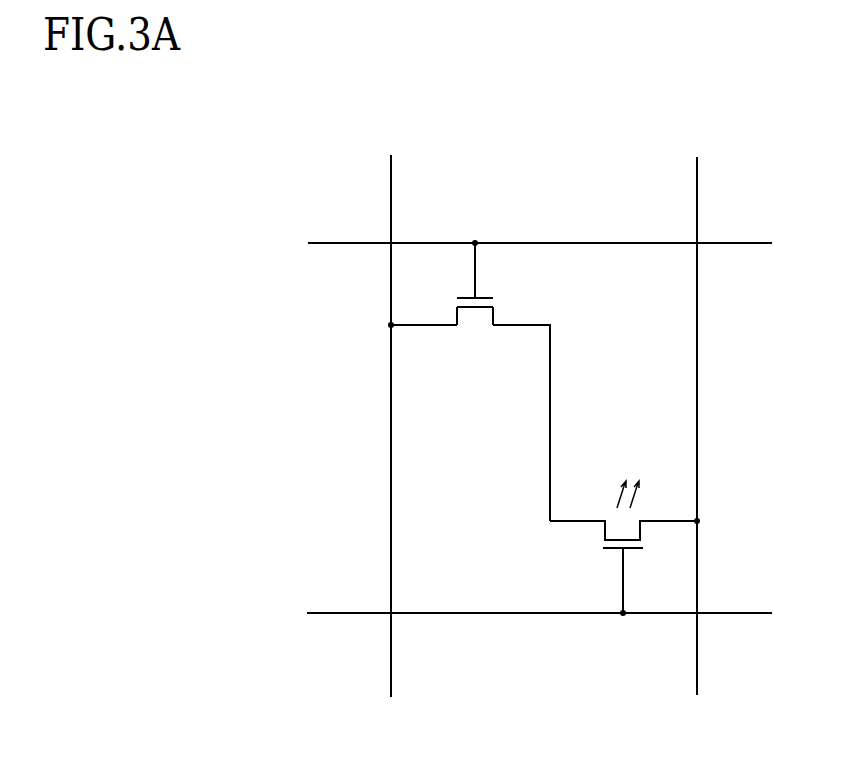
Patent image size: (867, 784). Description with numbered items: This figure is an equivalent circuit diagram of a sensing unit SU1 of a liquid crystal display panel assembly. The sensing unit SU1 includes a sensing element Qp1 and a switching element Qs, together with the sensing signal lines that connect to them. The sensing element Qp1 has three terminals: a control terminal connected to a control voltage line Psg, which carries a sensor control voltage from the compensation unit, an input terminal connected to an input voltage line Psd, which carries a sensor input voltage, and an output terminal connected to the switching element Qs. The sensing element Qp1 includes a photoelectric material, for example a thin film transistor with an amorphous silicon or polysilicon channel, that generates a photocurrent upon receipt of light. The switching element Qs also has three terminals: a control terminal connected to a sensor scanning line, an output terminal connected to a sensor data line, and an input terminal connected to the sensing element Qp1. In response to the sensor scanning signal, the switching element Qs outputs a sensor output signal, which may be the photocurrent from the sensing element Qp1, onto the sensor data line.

The sensing unit SU1 is at (546, 96).
The input voltage line Psd is at (697, 413).
The control voltage line Psg is at (514, 610).
The switching element Qs is at (469, 382).
The sensing element Qp1 is at (625, 547).